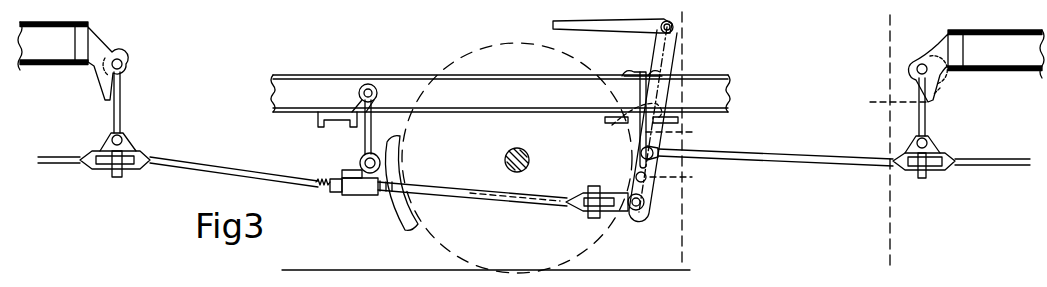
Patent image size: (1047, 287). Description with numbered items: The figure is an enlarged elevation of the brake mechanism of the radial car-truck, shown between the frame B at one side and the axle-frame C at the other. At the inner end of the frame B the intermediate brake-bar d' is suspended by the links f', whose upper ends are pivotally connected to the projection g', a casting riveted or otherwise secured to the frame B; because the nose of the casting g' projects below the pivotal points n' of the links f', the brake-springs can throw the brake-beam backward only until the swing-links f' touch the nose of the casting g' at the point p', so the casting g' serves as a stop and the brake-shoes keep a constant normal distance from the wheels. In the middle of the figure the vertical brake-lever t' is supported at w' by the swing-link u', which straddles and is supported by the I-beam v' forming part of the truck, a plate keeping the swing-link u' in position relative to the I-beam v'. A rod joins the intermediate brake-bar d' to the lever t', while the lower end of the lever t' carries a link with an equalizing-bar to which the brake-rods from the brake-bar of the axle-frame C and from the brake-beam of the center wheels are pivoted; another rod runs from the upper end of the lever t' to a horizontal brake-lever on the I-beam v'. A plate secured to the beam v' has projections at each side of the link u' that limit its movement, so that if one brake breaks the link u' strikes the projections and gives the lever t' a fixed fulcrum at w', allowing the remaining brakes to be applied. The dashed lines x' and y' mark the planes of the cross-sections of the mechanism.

The axle-frame C is at (53, 46).
The frame B is at (996, 54).
The projection g' is at (518, 57).
The pivotal points n' is at (958, 83).
The links f' is at (534, 104).
The I-beam v' is at (500, 93).
The vertical brake-lever t' is at (653, 124).
The swing-link u' is at (678, 131).
The support point w' is at (675, 175).
The section line y' is at (695, 135).
The section line x' is at (879, 141).
The stop point p' is at (890, 100).
The intermediate brake-bar d' is at (951, 182).